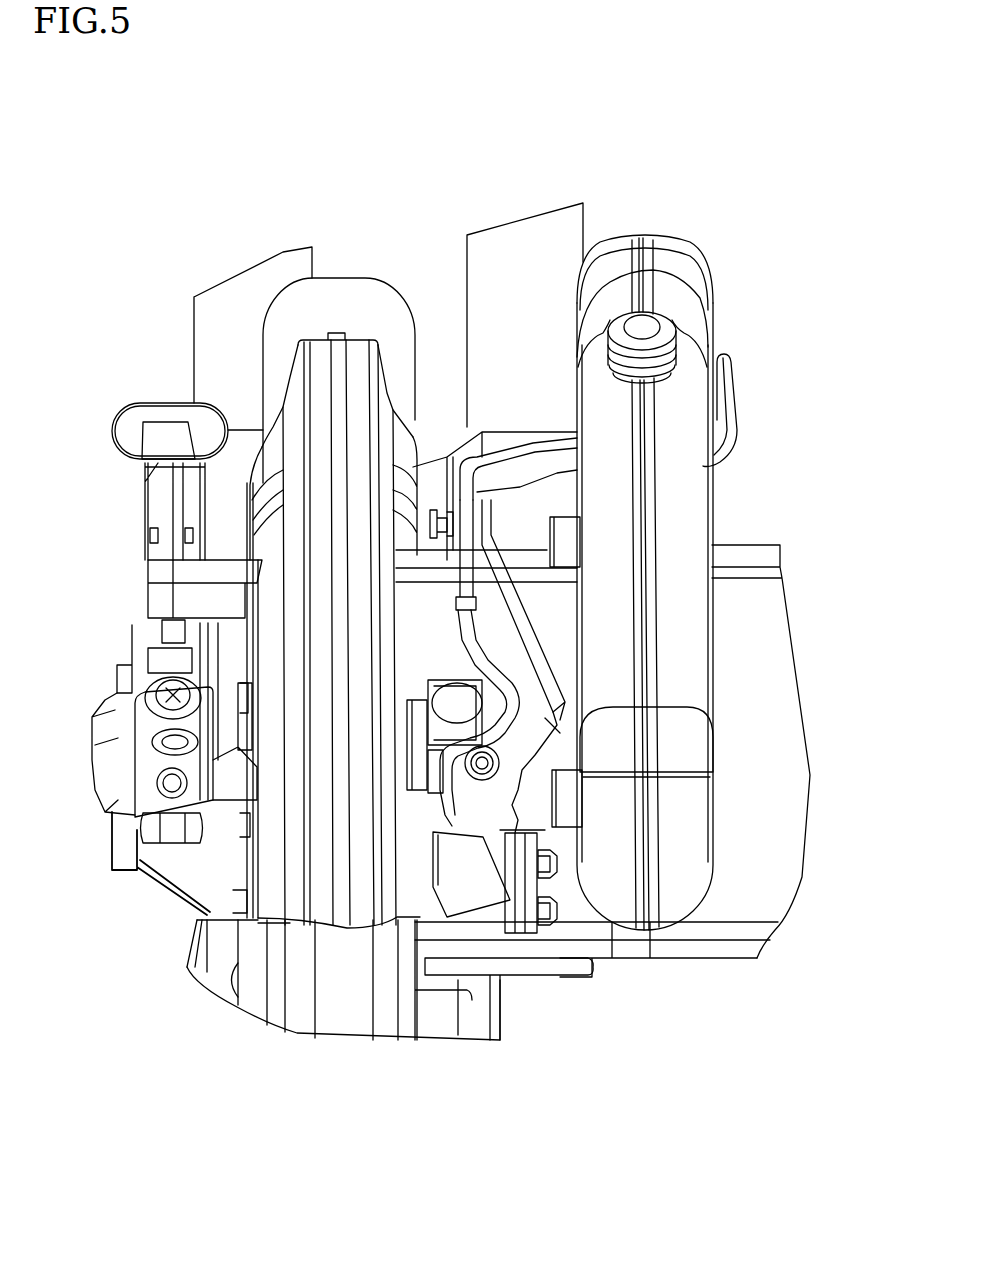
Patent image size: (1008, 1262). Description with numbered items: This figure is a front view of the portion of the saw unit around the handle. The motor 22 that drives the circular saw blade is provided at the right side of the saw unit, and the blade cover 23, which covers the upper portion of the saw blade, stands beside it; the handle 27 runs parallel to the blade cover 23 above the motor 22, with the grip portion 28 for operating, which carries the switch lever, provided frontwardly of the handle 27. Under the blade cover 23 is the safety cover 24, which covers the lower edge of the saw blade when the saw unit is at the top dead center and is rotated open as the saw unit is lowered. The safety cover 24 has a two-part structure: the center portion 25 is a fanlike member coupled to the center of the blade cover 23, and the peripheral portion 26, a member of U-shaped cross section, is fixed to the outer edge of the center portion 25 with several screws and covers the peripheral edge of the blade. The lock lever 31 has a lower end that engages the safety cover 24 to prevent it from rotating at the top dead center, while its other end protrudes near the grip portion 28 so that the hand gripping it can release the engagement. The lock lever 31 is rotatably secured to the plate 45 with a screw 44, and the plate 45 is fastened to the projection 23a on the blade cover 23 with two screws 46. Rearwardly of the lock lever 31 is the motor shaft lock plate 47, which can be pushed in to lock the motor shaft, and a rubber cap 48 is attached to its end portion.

The motor 22 is at (778, 708).
The blade cover 23 is at (358, 353).
The projection 23a is at (513, 910).
The safety cover 24 is at (353, 1047).
The center portion 25 is at (230, 878).
The peripheral portion 26 is at (284, 1014).
The handle 27 is at (660, 243).
The grip portion for operating 28 is at (692, 500).
The lock lever 31 is at (523, 463).
The screw 44 is at (478, 838).
The plate 45 is at (533, 918).
The screws 46 is at (557, 870).
The motor shaft lock plate 47 is at (413, 720).
The rubber cap 48 is at (457, 702).